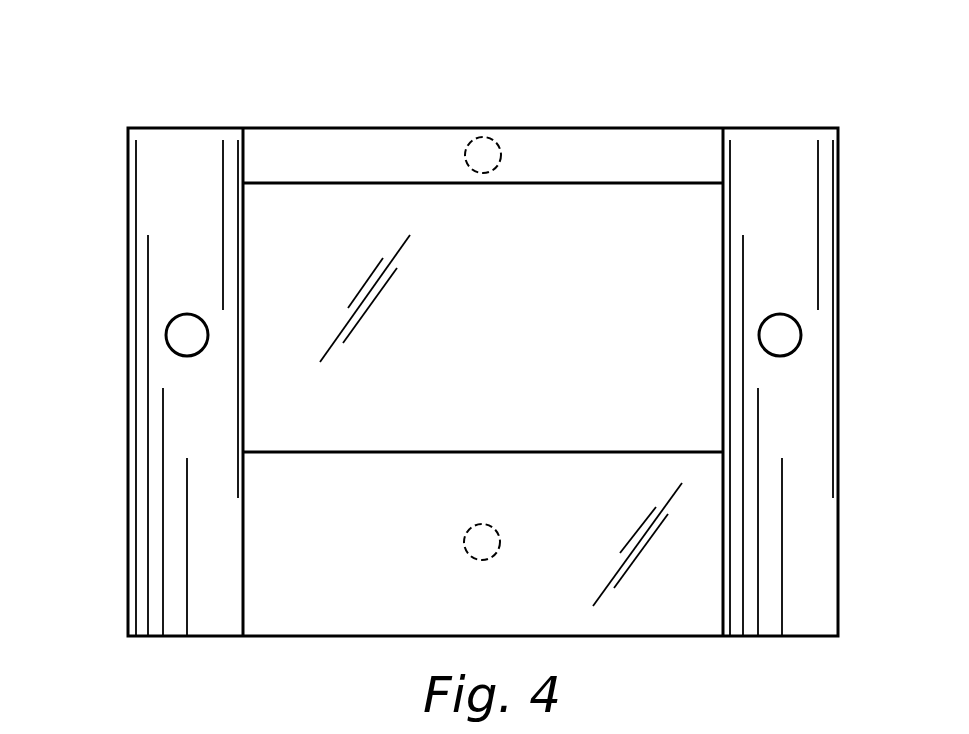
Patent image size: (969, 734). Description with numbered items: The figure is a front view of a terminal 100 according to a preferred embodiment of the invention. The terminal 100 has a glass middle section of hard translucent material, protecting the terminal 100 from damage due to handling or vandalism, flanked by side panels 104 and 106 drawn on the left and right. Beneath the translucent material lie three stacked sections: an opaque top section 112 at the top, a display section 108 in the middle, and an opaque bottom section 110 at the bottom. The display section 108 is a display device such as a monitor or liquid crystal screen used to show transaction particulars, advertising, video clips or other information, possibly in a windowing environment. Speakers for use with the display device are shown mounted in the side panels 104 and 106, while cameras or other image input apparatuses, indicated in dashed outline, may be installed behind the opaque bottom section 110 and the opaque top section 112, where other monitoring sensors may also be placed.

The terminal 100 is at (684, 76).
The side panel 104 is at (186, 127).
The side panel 106 is at (785, 131).
The display section 108 is at (328, 218).
The opaque bottom section 110 is at (335, 636).
The opaque top section 112 is at (538, 128).